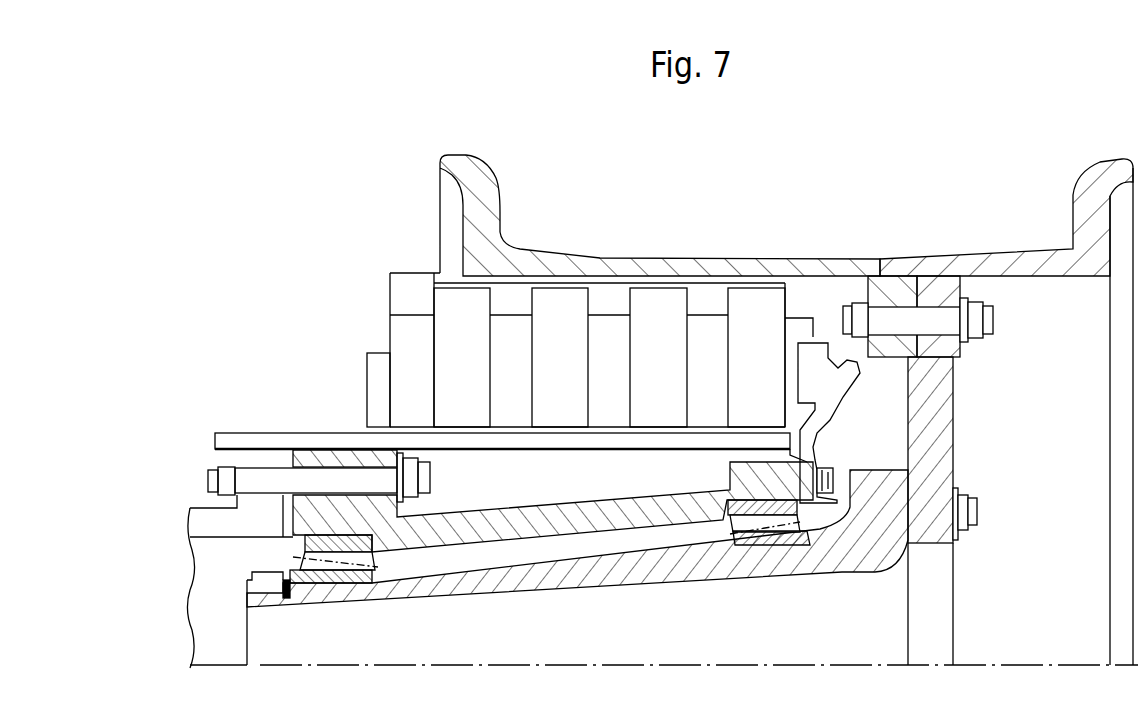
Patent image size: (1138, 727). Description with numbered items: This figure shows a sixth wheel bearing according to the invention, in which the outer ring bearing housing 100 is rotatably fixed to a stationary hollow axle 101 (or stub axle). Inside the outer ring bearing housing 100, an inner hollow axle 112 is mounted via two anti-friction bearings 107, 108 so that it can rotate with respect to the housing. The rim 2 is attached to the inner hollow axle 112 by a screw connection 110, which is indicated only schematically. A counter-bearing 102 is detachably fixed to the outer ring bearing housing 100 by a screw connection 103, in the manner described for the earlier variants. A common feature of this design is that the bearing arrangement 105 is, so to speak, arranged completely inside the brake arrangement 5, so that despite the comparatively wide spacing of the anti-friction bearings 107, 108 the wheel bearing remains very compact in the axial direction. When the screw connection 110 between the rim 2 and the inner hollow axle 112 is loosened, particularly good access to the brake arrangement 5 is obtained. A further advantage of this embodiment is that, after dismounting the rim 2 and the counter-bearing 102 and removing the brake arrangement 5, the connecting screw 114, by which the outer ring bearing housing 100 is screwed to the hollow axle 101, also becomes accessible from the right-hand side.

The rim 2 is at (740, 258).
The brake arrangement 5 is at (708, 342).
The outer ring bearing housing 100 is at (330, 520).
The hollow axle 101 is at (203, 527).
The counter-bearing 102 is at (823, 347).
The screw connection 103 is at (832, 477).
The bearing arrangement 105 is at (652, 640).
The anti-friction bearing 107 is at (347, 563).
The anti-friction bearing 108 is at (757, 532).
The screw connection 110 is at (977, 510).
The inner hollow axle 112 is at (835, 562).
The connecting screw 114 is at (327, 483).